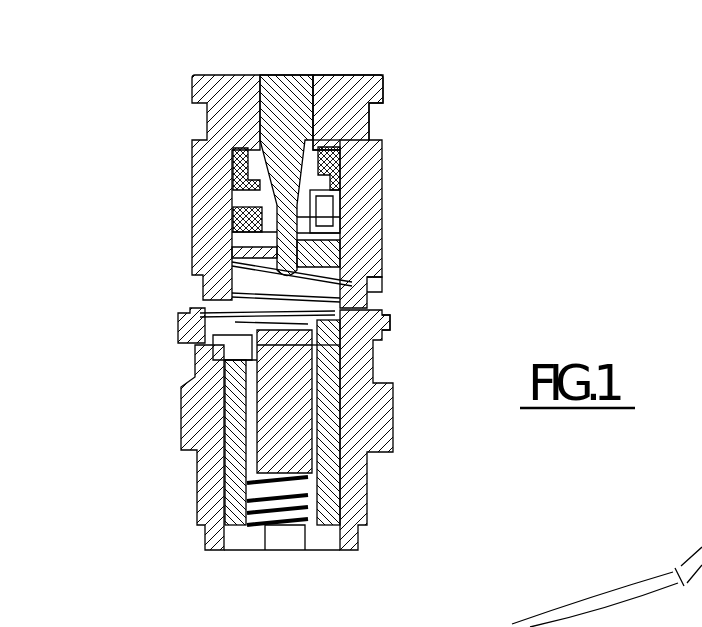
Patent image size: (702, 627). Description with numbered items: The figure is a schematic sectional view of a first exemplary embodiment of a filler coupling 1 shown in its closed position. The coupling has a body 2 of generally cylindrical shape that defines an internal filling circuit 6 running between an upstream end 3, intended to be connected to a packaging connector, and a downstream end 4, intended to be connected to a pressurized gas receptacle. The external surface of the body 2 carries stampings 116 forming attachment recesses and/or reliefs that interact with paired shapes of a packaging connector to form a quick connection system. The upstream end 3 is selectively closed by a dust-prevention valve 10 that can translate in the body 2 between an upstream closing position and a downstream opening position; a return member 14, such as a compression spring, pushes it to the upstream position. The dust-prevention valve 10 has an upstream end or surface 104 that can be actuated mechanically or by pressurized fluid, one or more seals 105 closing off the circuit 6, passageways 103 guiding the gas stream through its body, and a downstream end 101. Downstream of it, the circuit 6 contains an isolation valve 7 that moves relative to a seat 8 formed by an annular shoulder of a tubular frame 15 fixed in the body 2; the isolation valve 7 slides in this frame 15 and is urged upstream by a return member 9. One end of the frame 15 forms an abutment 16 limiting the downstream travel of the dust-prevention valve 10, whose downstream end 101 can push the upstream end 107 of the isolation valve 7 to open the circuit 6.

The filler coupling 1 is at (98, 390).
The body 2 is at (210, 238).
The upstream end 3 is at (317, 76).
The downstream end 4 is at (304, 550).
The internal filling circuit 6 is at (370, 292).
The isolation valve 7 is at (392, 422).
The seat 8 is at (373, 379).
The return member 9 is at (368, 478).
The dust-prevention valve 10 is at (350, 187).
The return member 14 is at (250, 292).
The tubular frame 15 is at (195, 425).
The abutment 16 is at (196, 313).
The downstream end 101 is at (384, 250).
The passageways 103 is at (262, 150).
The upstream end 104 is at (277, 76).
The seals 105 is at (348, 159).
The upstream end 107 is at (214, 341).
The stampings 116 is at (373, 300).